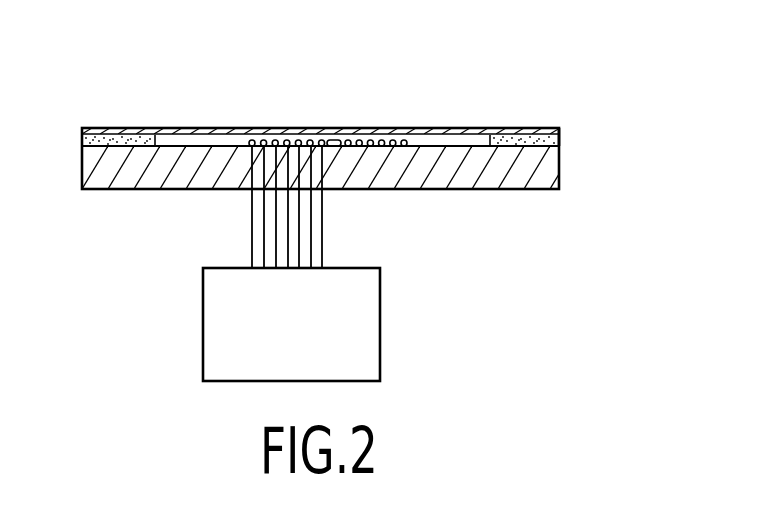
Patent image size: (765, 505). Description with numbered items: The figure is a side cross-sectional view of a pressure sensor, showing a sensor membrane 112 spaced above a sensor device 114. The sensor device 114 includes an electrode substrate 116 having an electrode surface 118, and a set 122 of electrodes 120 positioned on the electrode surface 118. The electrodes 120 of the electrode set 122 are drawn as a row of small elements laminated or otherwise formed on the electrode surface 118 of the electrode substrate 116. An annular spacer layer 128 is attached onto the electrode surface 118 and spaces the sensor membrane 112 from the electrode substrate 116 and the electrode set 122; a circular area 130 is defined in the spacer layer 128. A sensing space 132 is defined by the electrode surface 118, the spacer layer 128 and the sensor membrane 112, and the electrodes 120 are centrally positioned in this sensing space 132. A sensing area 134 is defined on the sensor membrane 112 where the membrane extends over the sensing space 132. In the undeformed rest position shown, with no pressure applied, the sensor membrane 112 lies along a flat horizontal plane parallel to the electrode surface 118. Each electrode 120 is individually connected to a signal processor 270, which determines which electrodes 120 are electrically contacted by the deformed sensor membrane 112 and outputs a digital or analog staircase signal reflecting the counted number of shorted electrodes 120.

The sensor membrane 112 is at (457, 128).
The sensor device 114 is at (594, 152).
The electrode substrate 116 is at (560, 170).
The electrode surface 118 is at (484, 129).
The electrodes 120 is at (266, 141).
The set of electrodes 122 is at (320, 102).
The spacer layer 128 is at (559, 138).
The circular area 130 is at (168, 140).
The sensing space 132 is at (180, 140).
The sensing area 134 is at (383, 128).
The signal processor 270 is at (203, 337).